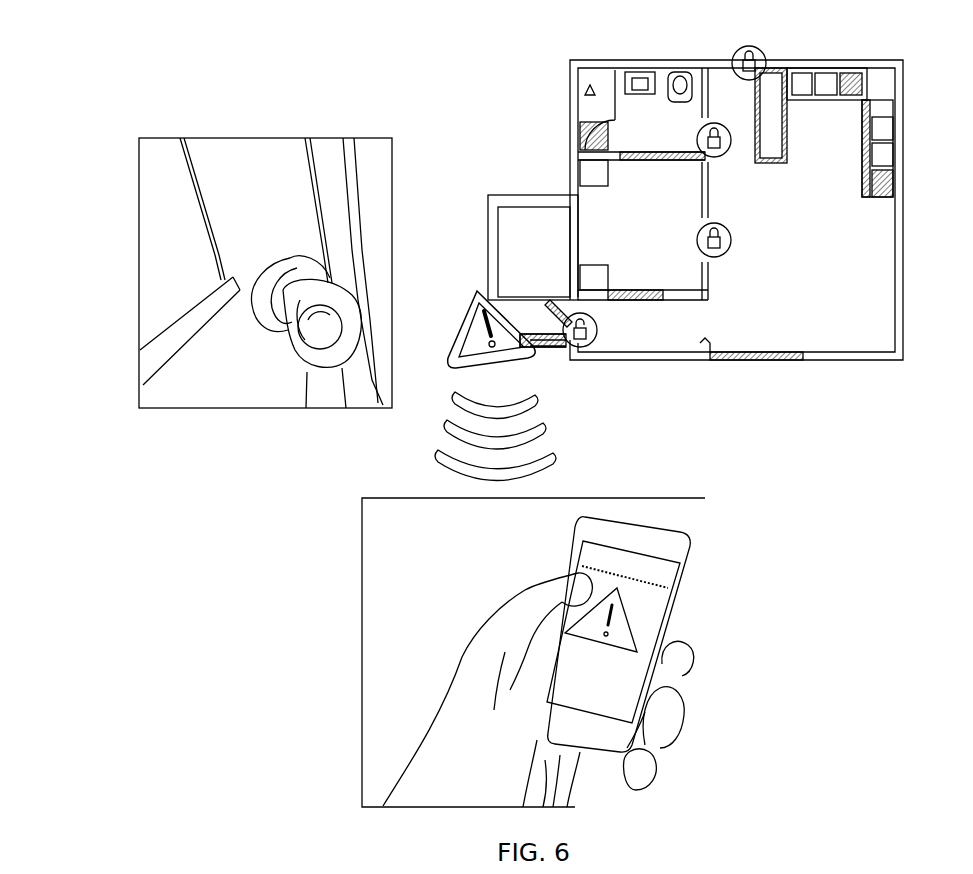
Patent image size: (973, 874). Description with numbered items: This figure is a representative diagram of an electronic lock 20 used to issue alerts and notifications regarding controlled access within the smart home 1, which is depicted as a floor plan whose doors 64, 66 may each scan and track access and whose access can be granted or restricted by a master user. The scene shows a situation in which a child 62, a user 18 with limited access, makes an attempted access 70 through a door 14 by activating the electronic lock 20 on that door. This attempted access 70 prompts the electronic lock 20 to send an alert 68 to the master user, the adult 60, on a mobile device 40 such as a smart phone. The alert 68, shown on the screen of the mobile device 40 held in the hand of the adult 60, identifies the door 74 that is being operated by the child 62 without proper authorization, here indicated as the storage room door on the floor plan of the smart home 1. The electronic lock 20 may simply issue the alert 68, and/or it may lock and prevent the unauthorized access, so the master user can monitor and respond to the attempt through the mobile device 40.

The smart home 1 is at (903, 354).
The door 14 is at (243, 152).
The user 18 is at (454, 724).
The electronic lock 20 is at (284, 279).
The mobile device 40 is at (680, 543).
The adult 60 is at (346, 752).
The child 62 is at (348, 394).
The door 64 is at (600, 332).
The door 66 is at (766, 50).
The alert 68 is at (730, 150).
The attempted access 70 is at (734, 233).
The door 74 is at (553, 310).